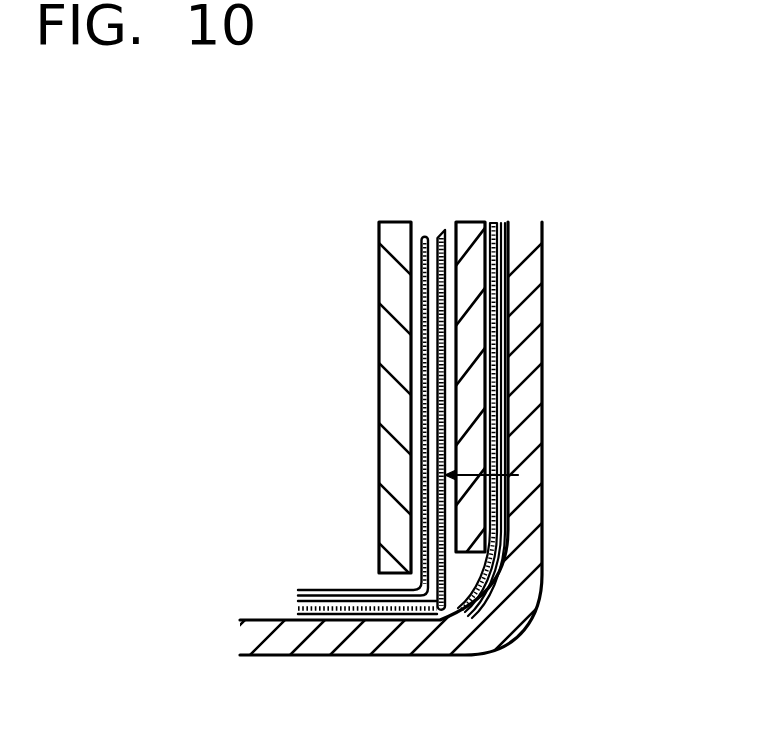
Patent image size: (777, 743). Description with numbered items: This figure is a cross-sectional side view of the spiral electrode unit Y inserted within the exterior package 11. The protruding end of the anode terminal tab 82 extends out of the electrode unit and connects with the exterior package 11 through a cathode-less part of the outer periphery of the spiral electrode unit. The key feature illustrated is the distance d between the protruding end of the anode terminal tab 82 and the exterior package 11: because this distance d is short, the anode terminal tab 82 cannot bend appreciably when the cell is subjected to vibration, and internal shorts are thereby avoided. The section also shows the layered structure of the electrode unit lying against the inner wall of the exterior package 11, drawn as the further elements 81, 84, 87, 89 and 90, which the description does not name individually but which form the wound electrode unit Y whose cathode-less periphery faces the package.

The exterior package 11 is at (533, 363).
The conductive layer 81 is at (480, 226).
The anode terminal tab 82 is at (307, 602).
The electrode block 84 is at (387, 278).
The adhesive layer 87 is at (425, 236).
The insulating block 89 is at (457, 228).
The conductive sheet 90 is at (447, 230).
The distance d is at (455, 480).